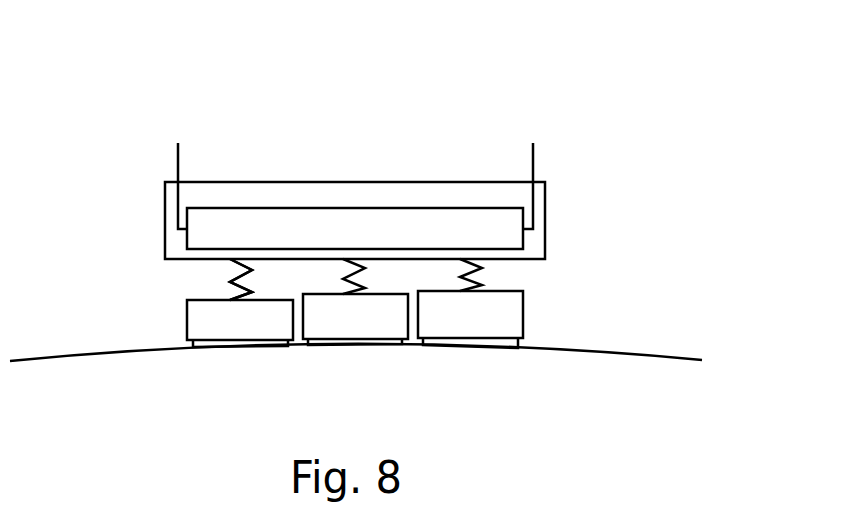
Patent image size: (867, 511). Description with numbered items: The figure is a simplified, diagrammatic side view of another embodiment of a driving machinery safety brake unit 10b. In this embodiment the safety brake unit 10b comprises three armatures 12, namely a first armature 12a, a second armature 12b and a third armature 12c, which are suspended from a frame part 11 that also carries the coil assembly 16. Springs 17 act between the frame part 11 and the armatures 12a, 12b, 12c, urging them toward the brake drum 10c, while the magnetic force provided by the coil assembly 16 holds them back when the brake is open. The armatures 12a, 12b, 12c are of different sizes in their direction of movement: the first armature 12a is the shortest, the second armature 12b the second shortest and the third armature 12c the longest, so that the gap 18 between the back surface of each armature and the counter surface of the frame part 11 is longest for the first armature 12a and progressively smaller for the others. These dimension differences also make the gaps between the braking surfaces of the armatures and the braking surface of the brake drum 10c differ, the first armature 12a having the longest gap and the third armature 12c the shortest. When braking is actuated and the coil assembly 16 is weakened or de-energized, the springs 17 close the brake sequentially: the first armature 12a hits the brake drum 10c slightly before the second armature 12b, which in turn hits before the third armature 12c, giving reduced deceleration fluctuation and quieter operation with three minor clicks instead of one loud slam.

The safety brake unit 10b is at (476, 92).
The brake drum 10c is at (665, 355).
The frame part 11 is at (278, 192).
The coil assembly 16 is at (342, 217).
The springs 17 is at (237, 297).
The gap 18 is at (550, 277).
The armatures 12 is at (340, 350).
The first armature 12a is at (238, 327).
The second armature 12b is at (348, 327).
The third armature 12c is at (518, 312).